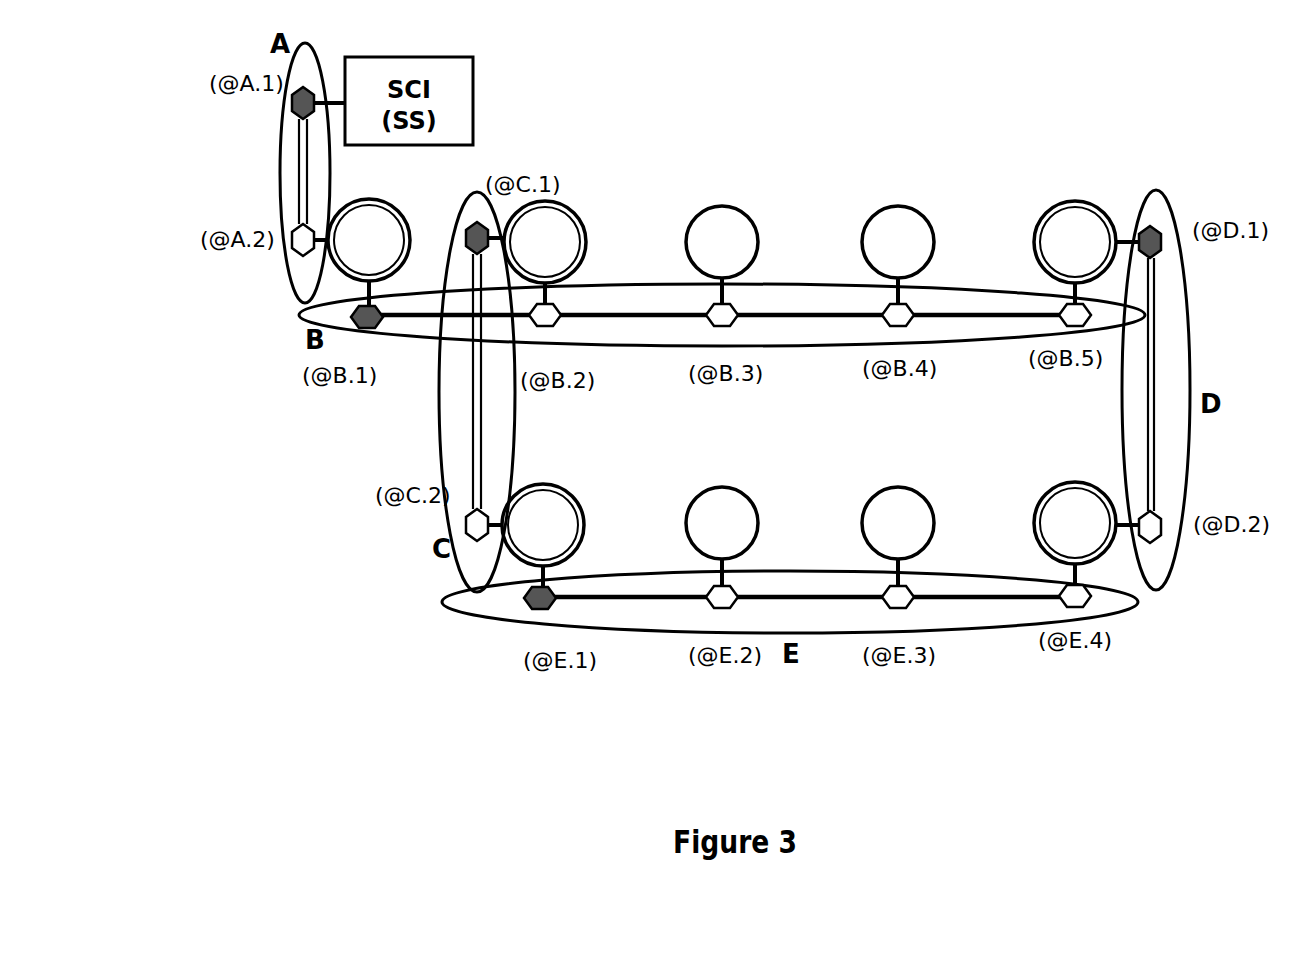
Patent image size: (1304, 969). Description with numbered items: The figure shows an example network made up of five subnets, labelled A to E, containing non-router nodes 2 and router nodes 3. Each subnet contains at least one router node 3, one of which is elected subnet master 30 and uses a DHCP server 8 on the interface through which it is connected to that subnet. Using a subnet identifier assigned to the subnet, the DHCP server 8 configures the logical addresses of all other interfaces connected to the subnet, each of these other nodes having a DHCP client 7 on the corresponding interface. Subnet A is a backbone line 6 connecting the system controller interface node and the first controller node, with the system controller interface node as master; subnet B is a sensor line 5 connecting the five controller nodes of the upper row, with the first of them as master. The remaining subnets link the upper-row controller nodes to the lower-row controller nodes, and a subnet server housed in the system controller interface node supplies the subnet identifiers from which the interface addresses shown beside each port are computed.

The subnet master 30 is at (557, 205).
The non-router node 2 is at (821, 378).
The router node 3 is at (722, 382).
The sensor line 5 is at (721, 330).
The backbone line 6 is at (1140, 384).
The DHCP client 7 is at (289, 246).
The DHCP server 8 is at (289, 104).